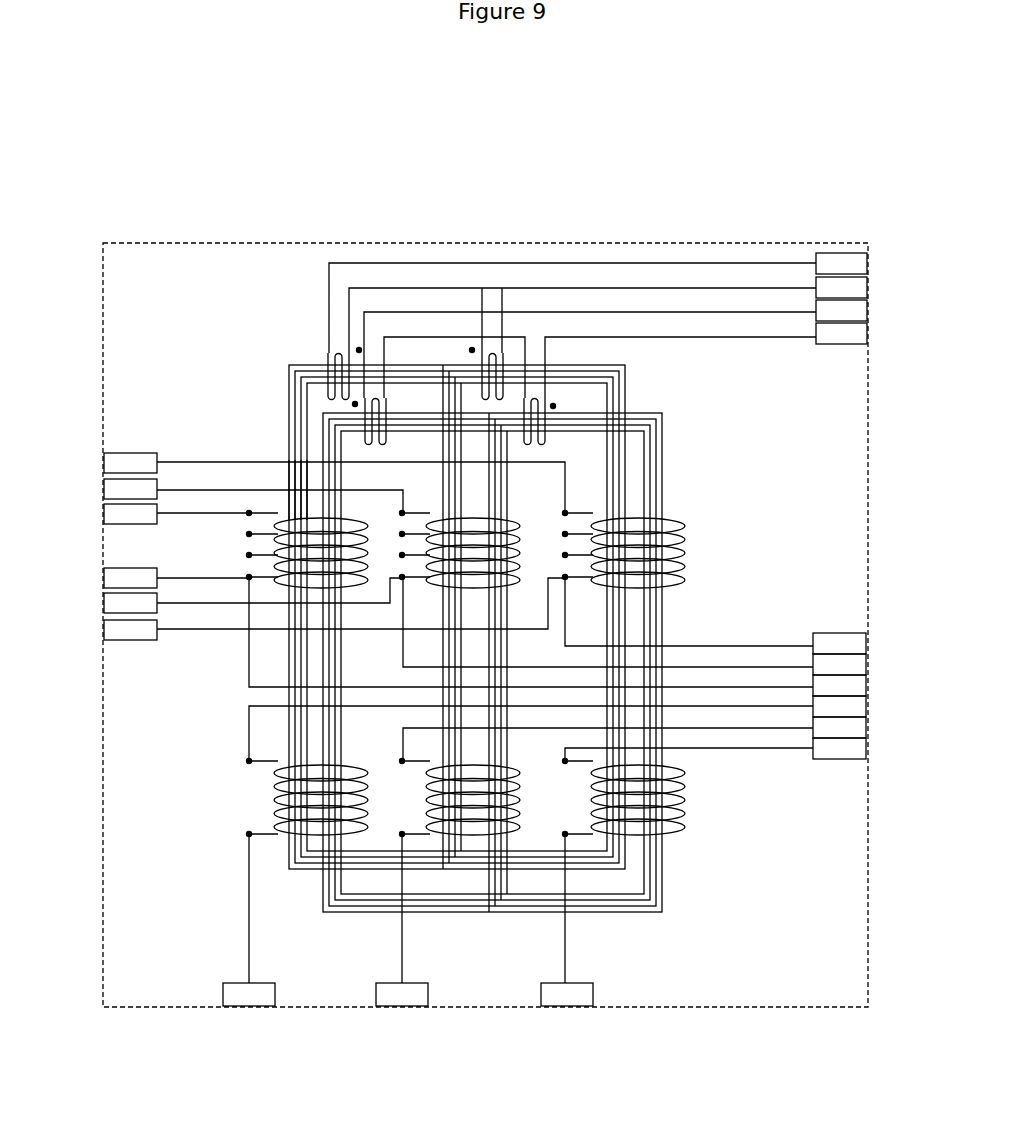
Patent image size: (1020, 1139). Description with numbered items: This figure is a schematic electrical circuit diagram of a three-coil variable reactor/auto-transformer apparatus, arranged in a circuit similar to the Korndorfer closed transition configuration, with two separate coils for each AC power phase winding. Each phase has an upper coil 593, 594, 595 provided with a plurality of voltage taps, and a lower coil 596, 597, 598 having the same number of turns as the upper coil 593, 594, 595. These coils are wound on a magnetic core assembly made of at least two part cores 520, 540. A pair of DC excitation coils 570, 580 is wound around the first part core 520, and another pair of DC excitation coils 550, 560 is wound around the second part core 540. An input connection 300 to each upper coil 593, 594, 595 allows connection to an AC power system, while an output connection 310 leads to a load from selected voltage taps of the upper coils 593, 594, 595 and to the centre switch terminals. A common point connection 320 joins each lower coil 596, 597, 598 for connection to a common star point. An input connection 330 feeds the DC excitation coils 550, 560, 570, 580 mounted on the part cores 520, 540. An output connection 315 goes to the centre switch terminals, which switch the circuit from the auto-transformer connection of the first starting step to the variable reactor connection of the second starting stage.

The input connection 300 is at (104, 491).
The output connection 310 is at (104, 581).
The output connection to centre switch terminals 315 is at (838, 633).
The common point connection 320 is at (245, 1008).
The input connection to DC excitation coils 330 is at (867, 300).
The first part core 520 is at (662, 455).
The second part core 540 is at (623, 387).
The DC excitation coil 550 is at (327, 353).
The DC excitation coil 560 is at (472, 350).
The DC excitation coil 570 is at (359, 350).
The DC excitation coil 580 is at (553, 406).
The upper coil 593 is at (307, 497).
The upper coil 594 is at (443, 588).
The upper coil 595 is at (688, 555).
The lower coil 596 is at (293, 812).
The lower coil 597 is at (488, 808).
The lower coil 598 is at (687, 803).